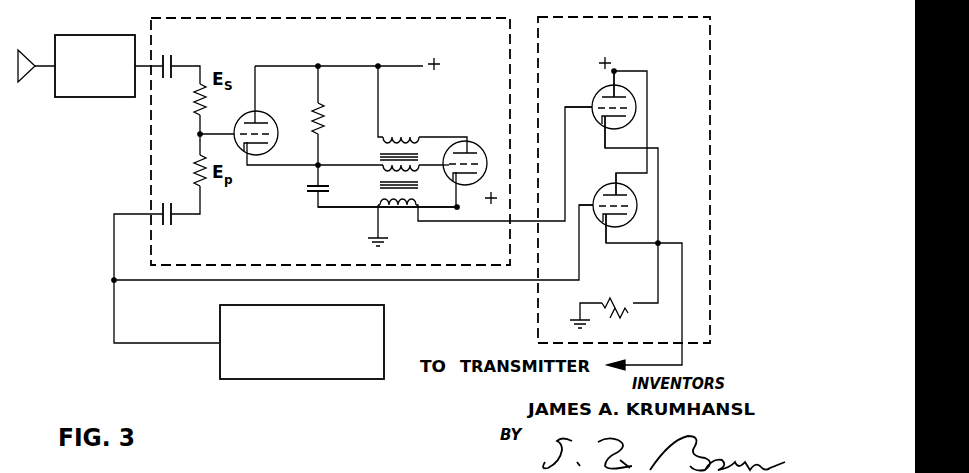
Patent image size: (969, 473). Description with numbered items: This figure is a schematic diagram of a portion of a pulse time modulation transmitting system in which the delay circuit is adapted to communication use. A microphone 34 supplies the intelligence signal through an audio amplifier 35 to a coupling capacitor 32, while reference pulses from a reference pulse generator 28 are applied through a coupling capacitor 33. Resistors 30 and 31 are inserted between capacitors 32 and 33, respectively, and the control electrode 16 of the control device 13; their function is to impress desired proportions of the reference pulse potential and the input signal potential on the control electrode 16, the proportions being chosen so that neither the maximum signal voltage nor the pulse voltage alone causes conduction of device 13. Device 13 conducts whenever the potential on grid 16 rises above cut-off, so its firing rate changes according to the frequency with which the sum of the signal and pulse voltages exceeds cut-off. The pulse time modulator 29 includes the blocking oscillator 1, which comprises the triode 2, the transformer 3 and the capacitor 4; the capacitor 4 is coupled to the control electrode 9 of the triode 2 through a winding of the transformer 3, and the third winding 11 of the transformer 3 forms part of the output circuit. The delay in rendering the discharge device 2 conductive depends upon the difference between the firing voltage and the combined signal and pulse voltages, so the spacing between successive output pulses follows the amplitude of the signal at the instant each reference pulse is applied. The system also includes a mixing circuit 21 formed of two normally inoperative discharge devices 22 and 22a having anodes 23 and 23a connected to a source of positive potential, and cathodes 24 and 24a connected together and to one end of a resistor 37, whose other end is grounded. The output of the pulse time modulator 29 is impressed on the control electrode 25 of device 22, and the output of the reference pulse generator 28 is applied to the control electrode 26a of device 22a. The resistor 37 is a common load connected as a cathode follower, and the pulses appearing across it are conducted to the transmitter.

The microphone 34 is at (30, 83).
The audio amplifier 35 is at (101, 97).
The coupling capacitor 32 is at (172, 64).
The resistor 30 is at (196, 104).
The control electrode 16 is at (236, 118).
The control device 13 is at (281, 121).
The resistor 31 is at (196, 172).
The coupling capacitor 33 is at (175, 217).
The capacitor 4 is at (310, 190).
The blocking oscillator 1 is at (314, 241).
The transformer 3 is at (395, 131).
The third winding 11 is at (404, 206).
The control electrode 9 is at (452, 168).
The triode 2 is at (482, 143).
The pulse time modulator 29 is at (509, 46).
The reference pulse generator 28 is at (385, 334).
The mixing circuit 21 is at (705, 97).
The electron discharge device 22 is at (636, 100).
The anode 23 is at (608, 92).
The cathode 24 is at (617, 121).
The control electrode 25 is at (597, 115).
The electron discharge device 22a is at (626, 198).
The anode 23a is at (599, 182).
The cathode 24a is at (617, 222).
The control electrode 26a is at (601, 224).
The resistor 37 is at (628, 299).